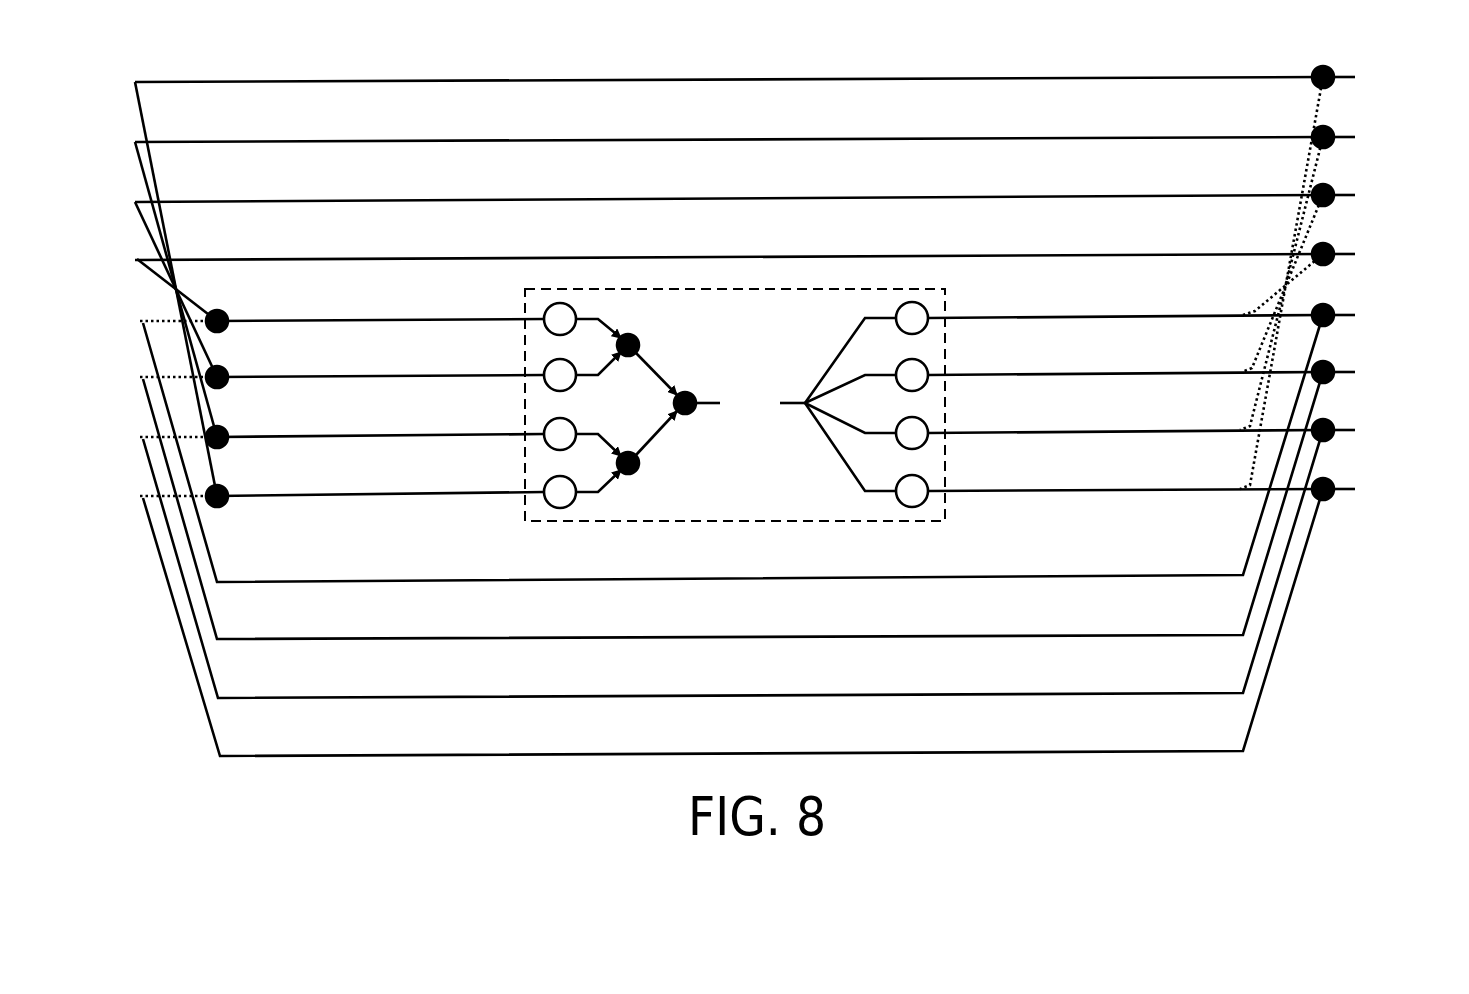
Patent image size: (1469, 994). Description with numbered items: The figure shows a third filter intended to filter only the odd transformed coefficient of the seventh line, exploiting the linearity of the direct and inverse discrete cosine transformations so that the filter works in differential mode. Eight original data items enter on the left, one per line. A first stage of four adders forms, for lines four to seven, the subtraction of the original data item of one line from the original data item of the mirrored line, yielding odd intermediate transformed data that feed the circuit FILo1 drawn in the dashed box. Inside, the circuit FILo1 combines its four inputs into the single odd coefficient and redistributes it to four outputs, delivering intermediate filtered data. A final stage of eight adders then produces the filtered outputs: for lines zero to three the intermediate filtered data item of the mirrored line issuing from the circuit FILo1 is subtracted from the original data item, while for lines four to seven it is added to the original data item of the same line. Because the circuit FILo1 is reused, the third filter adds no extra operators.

The odd-data filtering circuit FILo1 is at (787, 426).